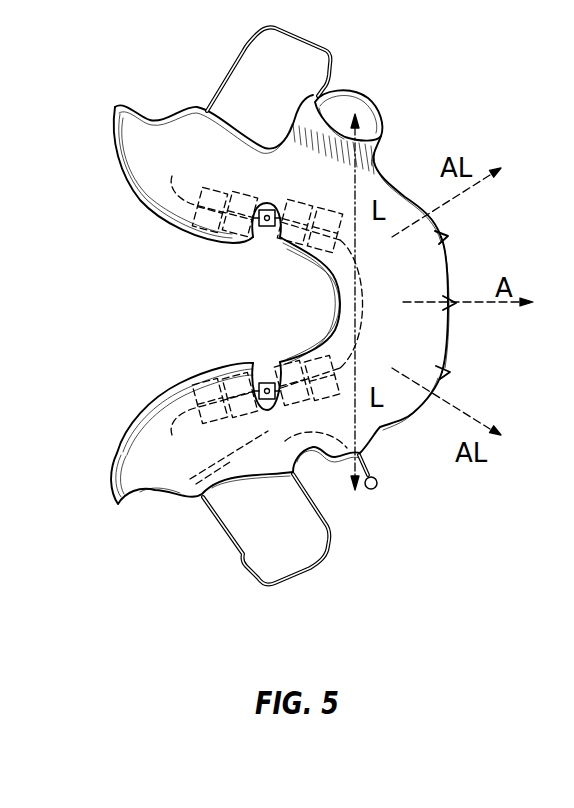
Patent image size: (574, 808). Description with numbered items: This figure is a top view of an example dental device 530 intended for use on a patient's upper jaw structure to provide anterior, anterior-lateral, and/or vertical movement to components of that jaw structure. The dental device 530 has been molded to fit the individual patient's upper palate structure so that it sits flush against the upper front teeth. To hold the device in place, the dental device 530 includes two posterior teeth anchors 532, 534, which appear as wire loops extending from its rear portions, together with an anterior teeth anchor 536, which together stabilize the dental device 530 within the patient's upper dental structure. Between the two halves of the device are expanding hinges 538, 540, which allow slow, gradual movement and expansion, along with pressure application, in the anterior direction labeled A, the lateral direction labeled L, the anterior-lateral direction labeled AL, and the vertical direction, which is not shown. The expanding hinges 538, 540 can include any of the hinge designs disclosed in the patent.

The dental device 530 is at (119, 471).
The posterior teeth anchor 532 is at (225, 530).
The posterior teeth anchor 534 is at (230, 71).
The anterior teeth anchor 536 is at (374, 489).
The expanding hinge 538 is at (263, 235).
The expanding hinge 540 is at (263, 375).